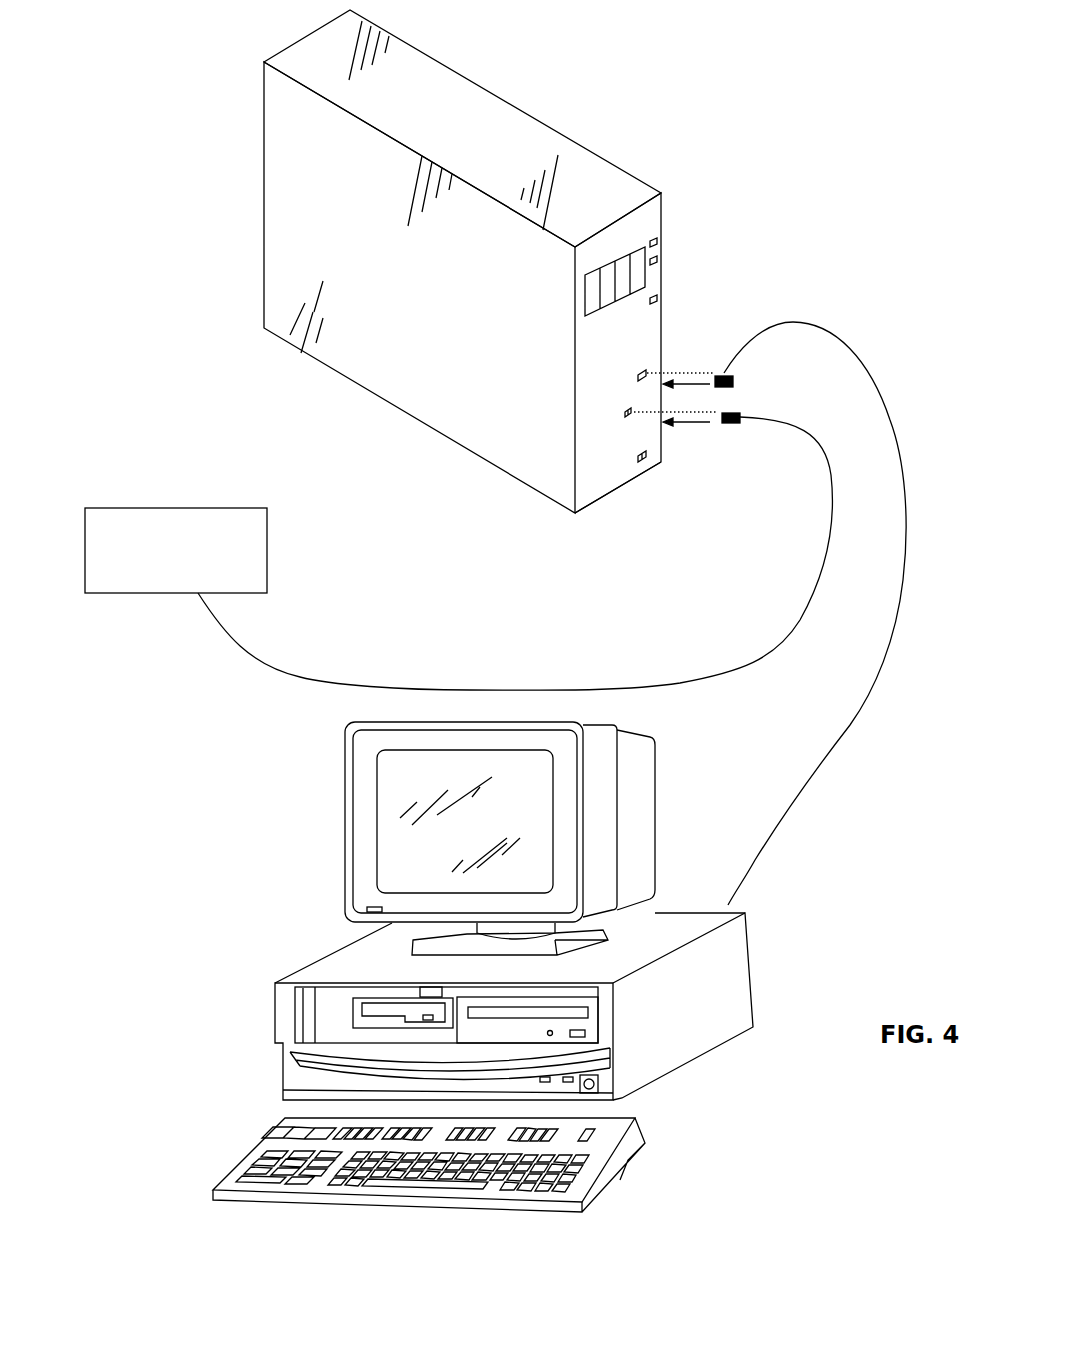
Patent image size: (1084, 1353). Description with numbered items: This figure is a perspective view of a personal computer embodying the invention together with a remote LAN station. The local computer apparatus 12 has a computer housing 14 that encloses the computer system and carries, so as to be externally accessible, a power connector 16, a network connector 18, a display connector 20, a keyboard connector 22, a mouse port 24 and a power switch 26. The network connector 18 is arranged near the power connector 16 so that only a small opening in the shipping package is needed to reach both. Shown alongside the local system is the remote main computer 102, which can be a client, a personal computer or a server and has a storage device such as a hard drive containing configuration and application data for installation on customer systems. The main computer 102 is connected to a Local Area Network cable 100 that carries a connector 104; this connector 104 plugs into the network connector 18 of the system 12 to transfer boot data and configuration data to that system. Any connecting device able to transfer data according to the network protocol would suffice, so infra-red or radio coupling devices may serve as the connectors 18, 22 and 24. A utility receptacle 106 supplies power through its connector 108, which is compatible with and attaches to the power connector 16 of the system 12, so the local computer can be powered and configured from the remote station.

The computer apparatus 12 is at (405, 448).
The computer housing 14 is at (470, 78).
The power connector 16 is at (622, 413).
The network connector 18 is at (647, 370).
The display connector 20 is at (662, 233).
The keyboard connector 22 is at (662, 295).
The mouse port 24 is at (662, 257).
The power switch 26 is at (642, 477).
The network cable 100 is at (841, 731).
The remote main computer 102 is at (288, 797).
The connector 104 is at (737, 382).
The utility receptacle 106 is at (170, 508).
The connector 108 is at (725, 428).